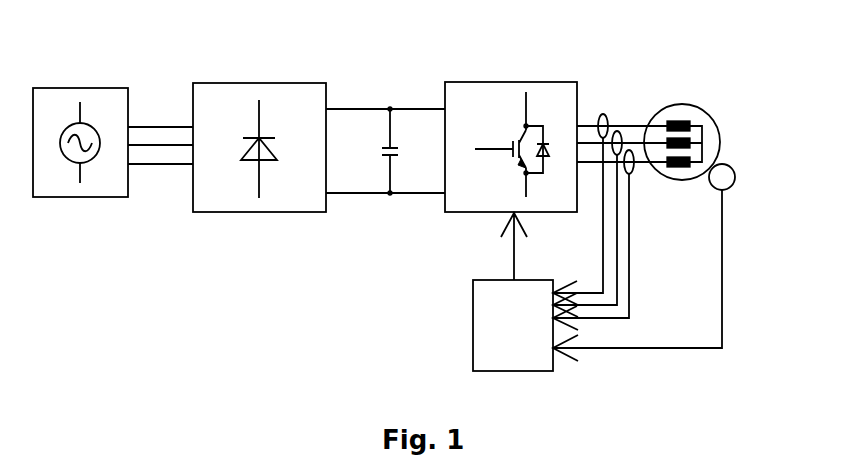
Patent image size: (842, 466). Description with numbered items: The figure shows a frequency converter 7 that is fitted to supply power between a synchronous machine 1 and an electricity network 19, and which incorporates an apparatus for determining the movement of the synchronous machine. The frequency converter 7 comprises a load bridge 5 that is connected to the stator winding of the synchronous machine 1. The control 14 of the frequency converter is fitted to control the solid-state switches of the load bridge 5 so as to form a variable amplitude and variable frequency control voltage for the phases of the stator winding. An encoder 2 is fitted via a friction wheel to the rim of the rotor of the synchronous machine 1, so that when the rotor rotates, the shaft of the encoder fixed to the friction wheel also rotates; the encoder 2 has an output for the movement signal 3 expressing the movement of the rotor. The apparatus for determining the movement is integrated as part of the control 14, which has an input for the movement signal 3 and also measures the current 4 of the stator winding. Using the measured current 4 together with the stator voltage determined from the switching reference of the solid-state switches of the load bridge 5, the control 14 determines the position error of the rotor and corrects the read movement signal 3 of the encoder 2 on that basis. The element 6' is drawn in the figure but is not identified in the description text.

The electricity network 19 is at (80, 85).
The frequency converter 7 is at (373, 70).
The DC link capacitor 6' is at (385, 192).
The load bridge 5 is at (505, 82).
The synchronous machine 1 is at (673, 104).
The encoder 2 is at (731, 165).
The current of the stator winding 4 is at (629, 210).
The movement signal 3 is at (723, 298).
The control 14 is at (472, 303).